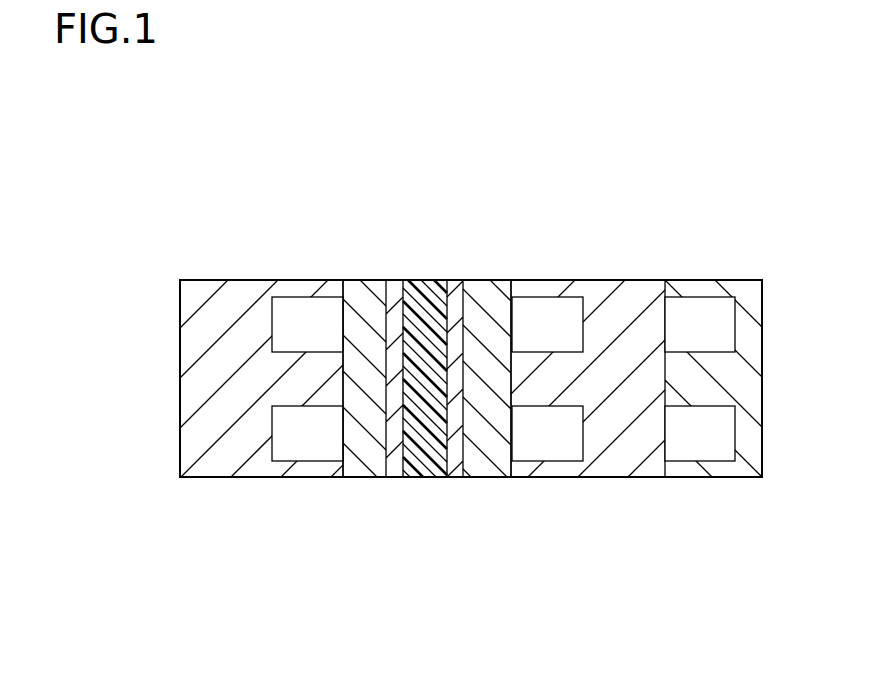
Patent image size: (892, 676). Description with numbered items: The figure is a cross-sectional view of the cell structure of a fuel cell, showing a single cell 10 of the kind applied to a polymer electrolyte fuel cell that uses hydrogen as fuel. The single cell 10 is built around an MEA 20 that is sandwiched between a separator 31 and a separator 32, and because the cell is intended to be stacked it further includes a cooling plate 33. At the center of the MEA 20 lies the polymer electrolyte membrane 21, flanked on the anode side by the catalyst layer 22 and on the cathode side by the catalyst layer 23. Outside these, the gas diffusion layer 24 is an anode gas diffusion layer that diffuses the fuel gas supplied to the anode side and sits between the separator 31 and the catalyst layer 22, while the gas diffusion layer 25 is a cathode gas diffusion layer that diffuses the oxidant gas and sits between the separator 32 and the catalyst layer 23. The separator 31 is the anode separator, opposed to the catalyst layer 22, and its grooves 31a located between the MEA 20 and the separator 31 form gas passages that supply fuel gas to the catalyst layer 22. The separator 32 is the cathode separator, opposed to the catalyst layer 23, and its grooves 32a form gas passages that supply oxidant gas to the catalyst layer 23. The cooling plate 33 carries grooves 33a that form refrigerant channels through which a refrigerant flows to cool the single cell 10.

The single cell 10 is at (171, 118).
The MEA 20 is at (515, 161).
The polymer electrolyte membrane 21 is at (430, 280).
The catalyst layer 22 is at (397, 280).
The catalyst layer 23 is at (452, 280).
The gas diffusion layer 24 is at (363, 280).
The gas diffusion layer 25 is at (485, 280).
The separator 31 is at (225, 462).
The grooves 31a is at (315, 462).
The separator 32 is at (622, 462).
The grooves 32a is at (555, 462).
The cooling plate 33 is at (750, 462).
The grooves 33a is at (702, 462).